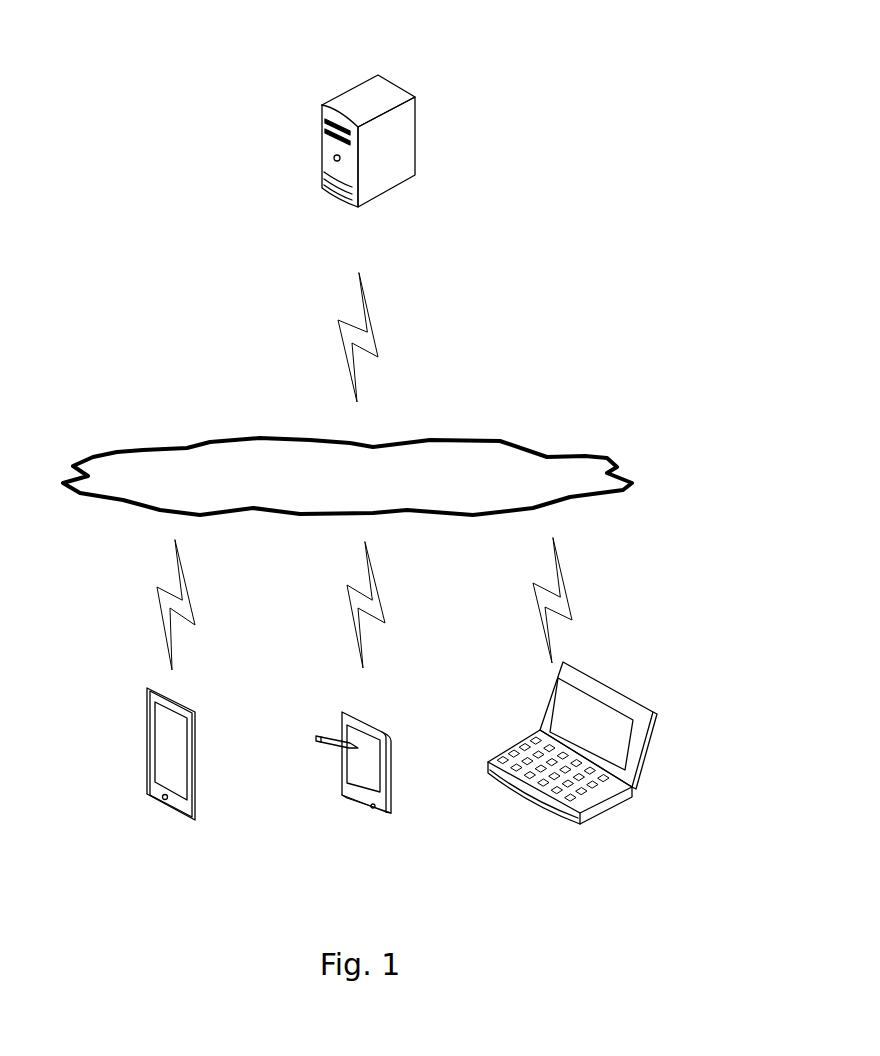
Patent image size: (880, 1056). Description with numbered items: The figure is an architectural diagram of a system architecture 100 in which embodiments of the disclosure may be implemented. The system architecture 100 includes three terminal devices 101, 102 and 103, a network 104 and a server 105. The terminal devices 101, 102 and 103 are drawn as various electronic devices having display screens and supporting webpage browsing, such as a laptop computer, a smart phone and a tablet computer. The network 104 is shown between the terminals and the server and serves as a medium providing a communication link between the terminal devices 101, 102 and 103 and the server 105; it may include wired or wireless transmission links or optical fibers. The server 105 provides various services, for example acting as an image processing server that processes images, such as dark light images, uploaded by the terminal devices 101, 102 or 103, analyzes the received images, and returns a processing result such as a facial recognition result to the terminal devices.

The system architecture 100 is at (521, 46).
The terminal device 101 is at (572, 762).
The terminal device 102 is at (353, 786).
The terminal device 103 is at (171, 772).
The network 104 is at (347, 476).
The server 105 is at (368, 162).